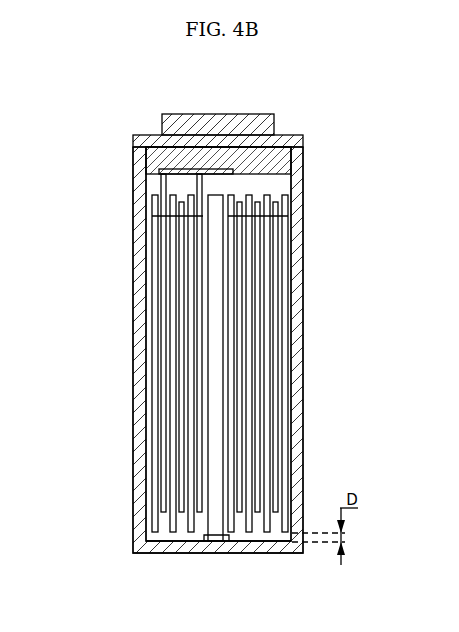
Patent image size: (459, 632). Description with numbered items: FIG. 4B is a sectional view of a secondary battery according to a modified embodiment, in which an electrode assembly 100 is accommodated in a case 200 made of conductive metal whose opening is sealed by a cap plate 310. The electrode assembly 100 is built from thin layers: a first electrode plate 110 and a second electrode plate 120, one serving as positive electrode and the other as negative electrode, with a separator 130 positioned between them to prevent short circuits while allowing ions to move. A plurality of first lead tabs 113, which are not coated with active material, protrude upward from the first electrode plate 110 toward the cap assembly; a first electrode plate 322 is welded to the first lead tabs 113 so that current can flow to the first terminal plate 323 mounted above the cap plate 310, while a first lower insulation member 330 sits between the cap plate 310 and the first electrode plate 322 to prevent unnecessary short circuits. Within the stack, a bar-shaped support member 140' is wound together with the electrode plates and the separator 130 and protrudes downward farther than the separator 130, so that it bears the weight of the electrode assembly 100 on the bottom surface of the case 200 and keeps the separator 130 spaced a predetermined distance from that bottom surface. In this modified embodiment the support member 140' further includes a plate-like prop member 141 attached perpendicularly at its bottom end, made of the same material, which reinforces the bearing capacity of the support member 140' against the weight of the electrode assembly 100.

The electrode assembly 100 is at (296, 303).
The first electrode plate 110 is at (263, 374).
The first lead tab 113 is at (147, 188).
The second electrode plate 120 is at (283, 428).
The separator 130 is at (238, 545).
The support member 140' is at (226, 406).
The prop member 141 is at (198, 545).
The case 200 is at (160, 545).
The cap plate 310 is at (152, 143).
The first electrode plate 322 is at (146, 152).
The first terminal plate 323 is at (213, 112).
The first lower insulation member 330 is at (303, 159).